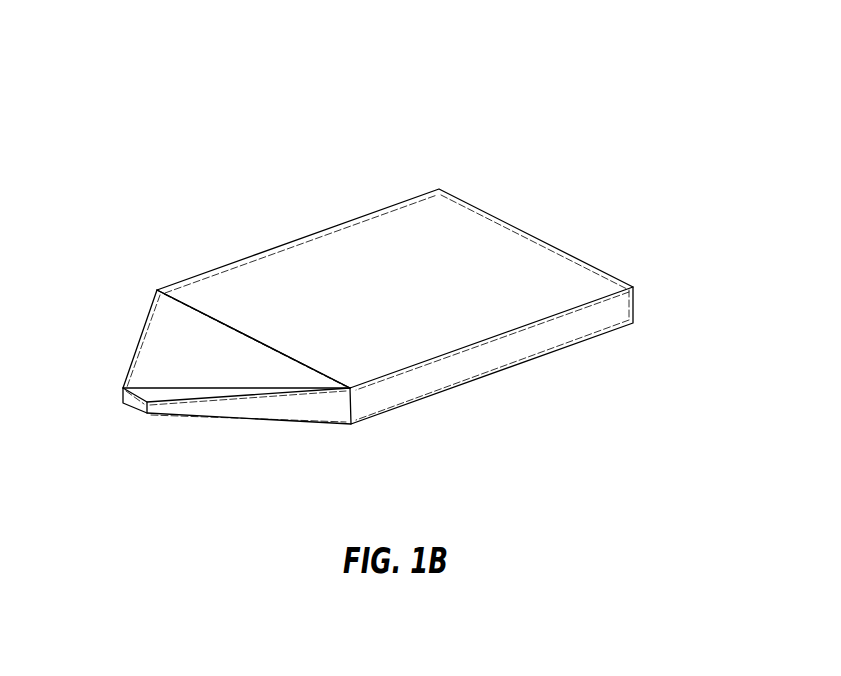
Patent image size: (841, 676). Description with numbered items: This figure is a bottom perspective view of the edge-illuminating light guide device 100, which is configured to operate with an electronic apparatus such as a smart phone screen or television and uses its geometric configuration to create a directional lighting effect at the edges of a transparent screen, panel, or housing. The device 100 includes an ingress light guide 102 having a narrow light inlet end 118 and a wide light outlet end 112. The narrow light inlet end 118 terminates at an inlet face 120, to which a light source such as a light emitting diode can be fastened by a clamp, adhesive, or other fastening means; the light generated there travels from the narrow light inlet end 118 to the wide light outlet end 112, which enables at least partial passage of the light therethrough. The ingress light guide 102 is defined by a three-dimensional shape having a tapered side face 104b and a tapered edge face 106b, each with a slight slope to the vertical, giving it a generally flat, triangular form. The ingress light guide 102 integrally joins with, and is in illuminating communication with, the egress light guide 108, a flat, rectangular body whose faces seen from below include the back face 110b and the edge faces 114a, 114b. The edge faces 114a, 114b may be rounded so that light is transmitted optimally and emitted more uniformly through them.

The edge-illuminating light guide device 100 is at (197, 160).
The ingress light guide 102 is at (178, 421).
The tapered side face 104b is at (145, 353).
The tapered edge face 106b is at (255, 412).
The egress light guide 108 is at (448, 152).
The back face 110b is at (367, 237).
The wide light outlet end 112 is at (353, 430).
The edge face 114a is at (273, 248).
The edge face 114b is at (495, 362).
The narrow light inlet end 118 is at (120, 405).
The inlet face 120 is at (133, 402).